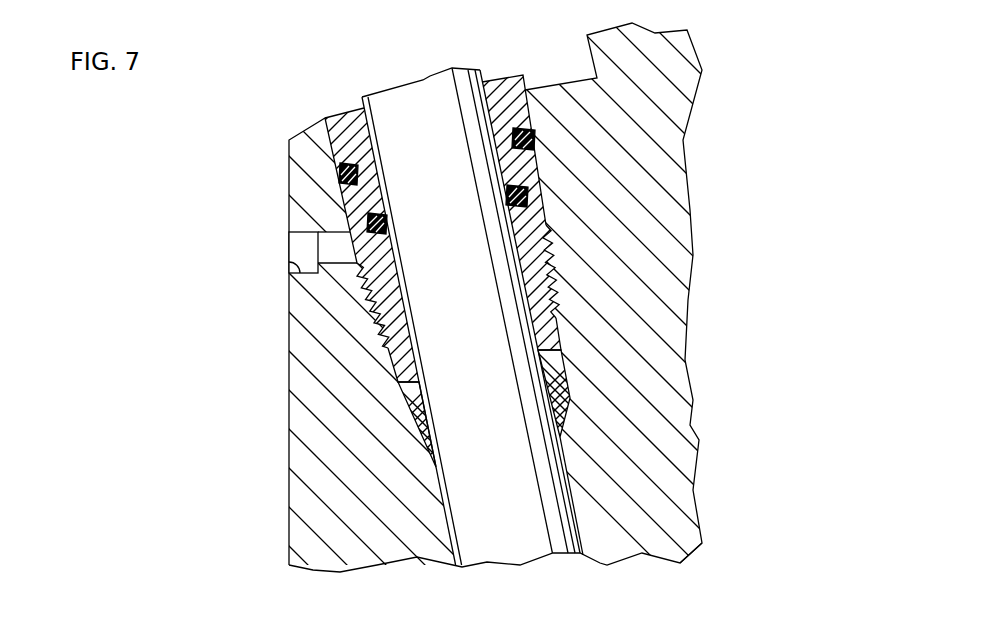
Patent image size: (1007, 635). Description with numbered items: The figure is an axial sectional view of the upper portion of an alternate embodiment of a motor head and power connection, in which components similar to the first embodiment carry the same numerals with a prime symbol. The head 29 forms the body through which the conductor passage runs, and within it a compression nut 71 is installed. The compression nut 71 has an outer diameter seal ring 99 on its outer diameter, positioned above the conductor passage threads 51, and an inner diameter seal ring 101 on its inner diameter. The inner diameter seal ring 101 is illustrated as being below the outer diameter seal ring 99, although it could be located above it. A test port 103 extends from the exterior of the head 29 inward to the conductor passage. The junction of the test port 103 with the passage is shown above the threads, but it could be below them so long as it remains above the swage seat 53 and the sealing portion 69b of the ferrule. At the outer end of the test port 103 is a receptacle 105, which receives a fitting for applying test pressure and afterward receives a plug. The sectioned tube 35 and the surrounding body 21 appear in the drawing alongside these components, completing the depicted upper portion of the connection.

The body 21 is at (708, 469).
The head 29 is at (300, 490).
The tube 35 is at (391, 97).
The conductor passage threads 51 is at (560, 283).
The swage seat 53 is at (413, 431).
The sealing portion of ferrule 69b is at (560, 417).
The compression nut 71 is at (537, 205).
The outer diameter seal ring 99 is at (338, 174).
The inner diameter seal ring 101 is at (384, 218).
The test port 103 is at (320, 266).
The receptacle 105 is at (289, 264).